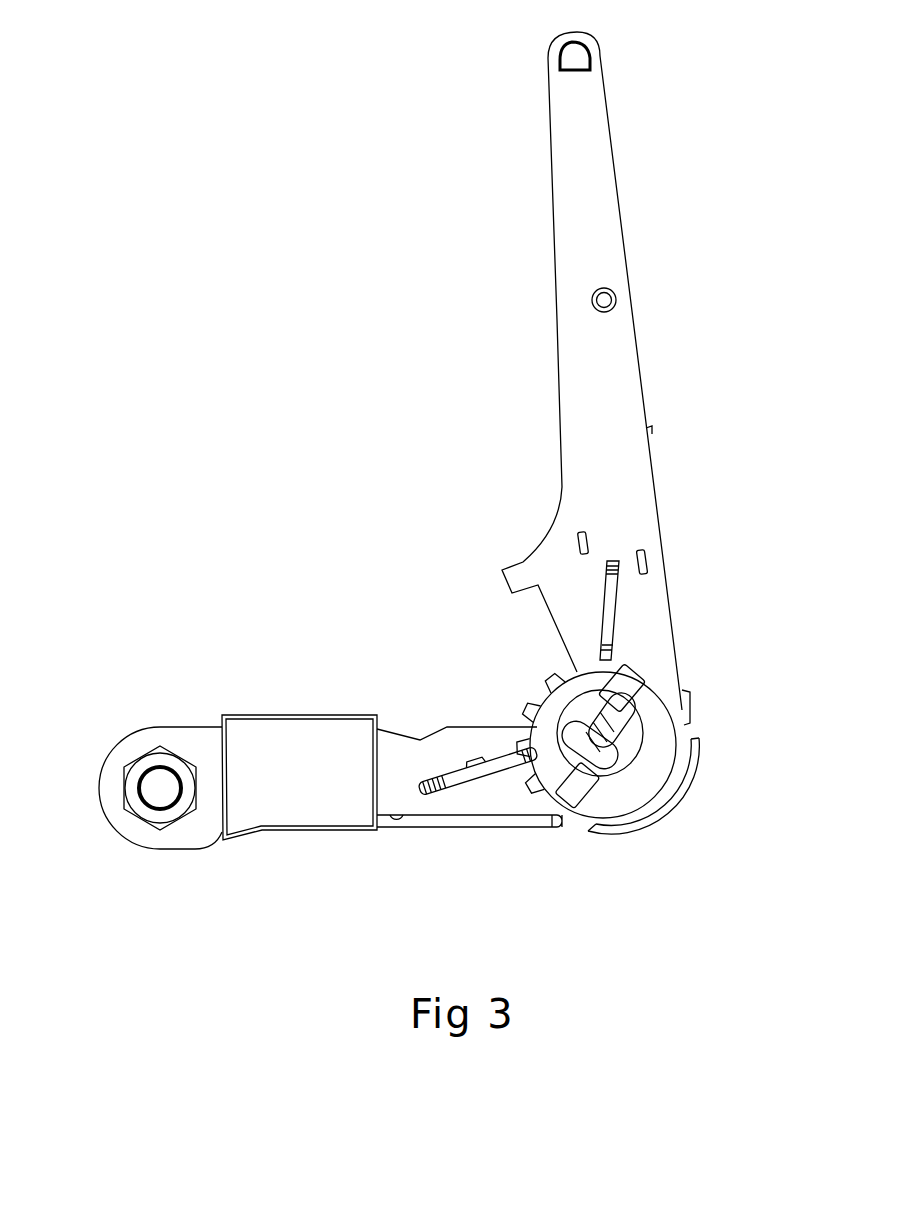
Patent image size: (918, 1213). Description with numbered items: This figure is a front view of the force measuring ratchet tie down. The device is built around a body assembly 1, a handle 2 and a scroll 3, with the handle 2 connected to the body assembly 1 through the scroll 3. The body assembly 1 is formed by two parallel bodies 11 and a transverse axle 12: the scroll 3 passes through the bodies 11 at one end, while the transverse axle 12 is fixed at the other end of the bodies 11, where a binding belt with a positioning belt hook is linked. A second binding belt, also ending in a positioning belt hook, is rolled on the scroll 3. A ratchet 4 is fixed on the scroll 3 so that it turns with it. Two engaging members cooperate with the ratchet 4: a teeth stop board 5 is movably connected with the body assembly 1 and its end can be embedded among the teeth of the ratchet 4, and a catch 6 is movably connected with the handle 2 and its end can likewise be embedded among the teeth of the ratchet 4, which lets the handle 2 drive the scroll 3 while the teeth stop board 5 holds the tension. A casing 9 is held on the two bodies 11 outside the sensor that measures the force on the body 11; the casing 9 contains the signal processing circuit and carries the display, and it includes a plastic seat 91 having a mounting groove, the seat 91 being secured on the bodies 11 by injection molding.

The body assembly 1 is at (364, 840).
The handle 2 is at (595, 240).
The scroll 3 is at (628, 725).
The ratchet 4 is at (540, 697).
The teeth stop board 5 is at (478, 777).
The catch 6 is at (610, 613).
The casing 9 is at (293, 823).
The seat 91 is at (285, 738).
The body 11 is at (400, 757).
The transverse axle 12 is at (153, 790).